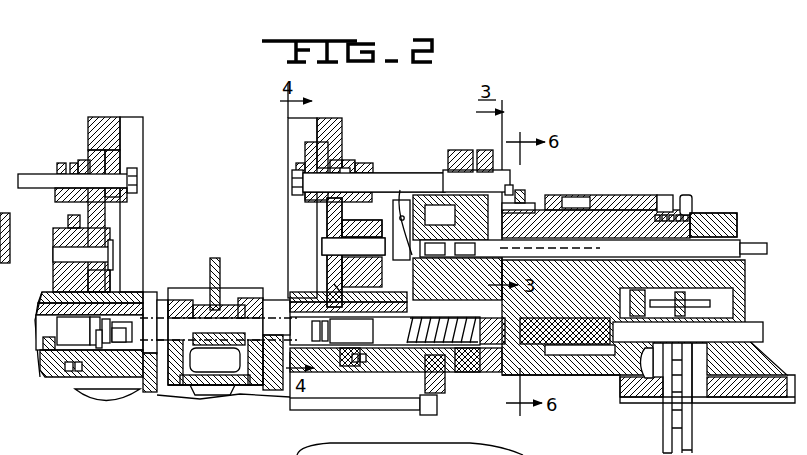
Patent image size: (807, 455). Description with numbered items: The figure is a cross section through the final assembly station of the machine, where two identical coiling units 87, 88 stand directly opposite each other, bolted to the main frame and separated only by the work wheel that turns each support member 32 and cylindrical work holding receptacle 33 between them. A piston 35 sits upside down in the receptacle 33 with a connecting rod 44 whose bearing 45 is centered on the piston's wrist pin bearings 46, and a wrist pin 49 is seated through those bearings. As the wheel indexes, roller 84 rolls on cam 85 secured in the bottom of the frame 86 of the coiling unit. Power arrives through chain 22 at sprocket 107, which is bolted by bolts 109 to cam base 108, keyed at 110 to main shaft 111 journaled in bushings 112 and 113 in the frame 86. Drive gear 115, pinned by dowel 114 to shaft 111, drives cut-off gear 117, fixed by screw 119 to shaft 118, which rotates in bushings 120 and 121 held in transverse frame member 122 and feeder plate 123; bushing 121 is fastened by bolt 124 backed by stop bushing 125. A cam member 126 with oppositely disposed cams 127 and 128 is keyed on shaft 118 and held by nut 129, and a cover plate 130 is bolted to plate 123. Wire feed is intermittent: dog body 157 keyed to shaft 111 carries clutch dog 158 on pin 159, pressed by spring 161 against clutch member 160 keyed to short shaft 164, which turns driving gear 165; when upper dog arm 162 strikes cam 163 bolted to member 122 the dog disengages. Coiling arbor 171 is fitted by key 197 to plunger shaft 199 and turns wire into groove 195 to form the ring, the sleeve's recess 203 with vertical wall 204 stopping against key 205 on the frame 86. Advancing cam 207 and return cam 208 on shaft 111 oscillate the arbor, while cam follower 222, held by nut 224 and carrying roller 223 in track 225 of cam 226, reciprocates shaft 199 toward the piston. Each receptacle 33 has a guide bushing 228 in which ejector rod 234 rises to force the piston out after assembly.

The chain 22 is at (689, 443).
The support member 32 is at (152, 393).
The work holding receptacle 33 is at (272, 298).
The piston 35 is at (181, 290).
The connecting rod 44 is at (222, 245).
The bearing 45 is at (215, 336).
The wrist pin bearings 46 is at (250, 386).
The wrist pin 49 is at (229, 311).
The roller 84 is at (432, 416).
The cam 85 is at (438, 401).
The frame 86 is at (597, 371).
The coiling unit 87 is at (328, 121).
The coiling unit 88 is at (104, 122).
The sprocket 107 is at (684, 200).
The cam base 108 is at (646, 212).
The bolts 109 is at (692, 226).
The key 110 is at (605, 241).
The shaft 111 is at (753, 247).
The bushing 112 is at (734, 228).
The bushing 113 is at (451, 250).
The dowel 114 is at (500, 249).
The drive gear 115 is at (479, 250).
The cut-off gear 117 is at (494, 151).
The shaft 118 is at (39, 180).
The screw 119 is at (510, 195).
The bushing 120 is at (461, 205).
The bushing 121 is at (347, 162).
The transverse frame member 122 is at (460, 150).
The feeder plate 123 is at (343, 158).
The bolt 124 is at (357, 166).
The stop bushing 125 is at (373, 167).
The cam member 126 is at (113, 167).
The cam 127 is at (120, 150).
The cam 128 is at (122, 198).
The nut 129 is at (140, 180).
The cover plate 130 is at (143, 125).
The dog body 157 is at (421, 313).
The clutch dog 158 is at (327, 238).
The pin 159 is at (410, 226).
The clutch member 160 is at (334, 289).
The spring 161 is at (402, 212).
The upper dog arm 162 is at (374, 181).
The cam 163 is at (426, 341).
The short shaft 164 is at (100, 252).
The driving gear 165 is at (57, 276).
The coiling arbor 171 is at (102, 334).
The groove 195 is at (118, 352).
The key 197 is at (216, 331).
The plunger shaft 199 is at (45, 328).
The recess 203 is at (355, 368).
The vertical wall 204 is at (389, 408).
The key 205 is at (82, 373).
The advancing cam 207 is at (526, 197).
The return cam 208 is at (522, 188).
The cam follower 222 is at (697, 293).
The roller 223 is at (641, 336).
The nut 224 is at (648, 360).
The track 225 is at (576, 197).
The cam 226 is at (616, 190).
The guide bushing 228 is at (197, 388).
The ejector rod 234 is at (217, 394).